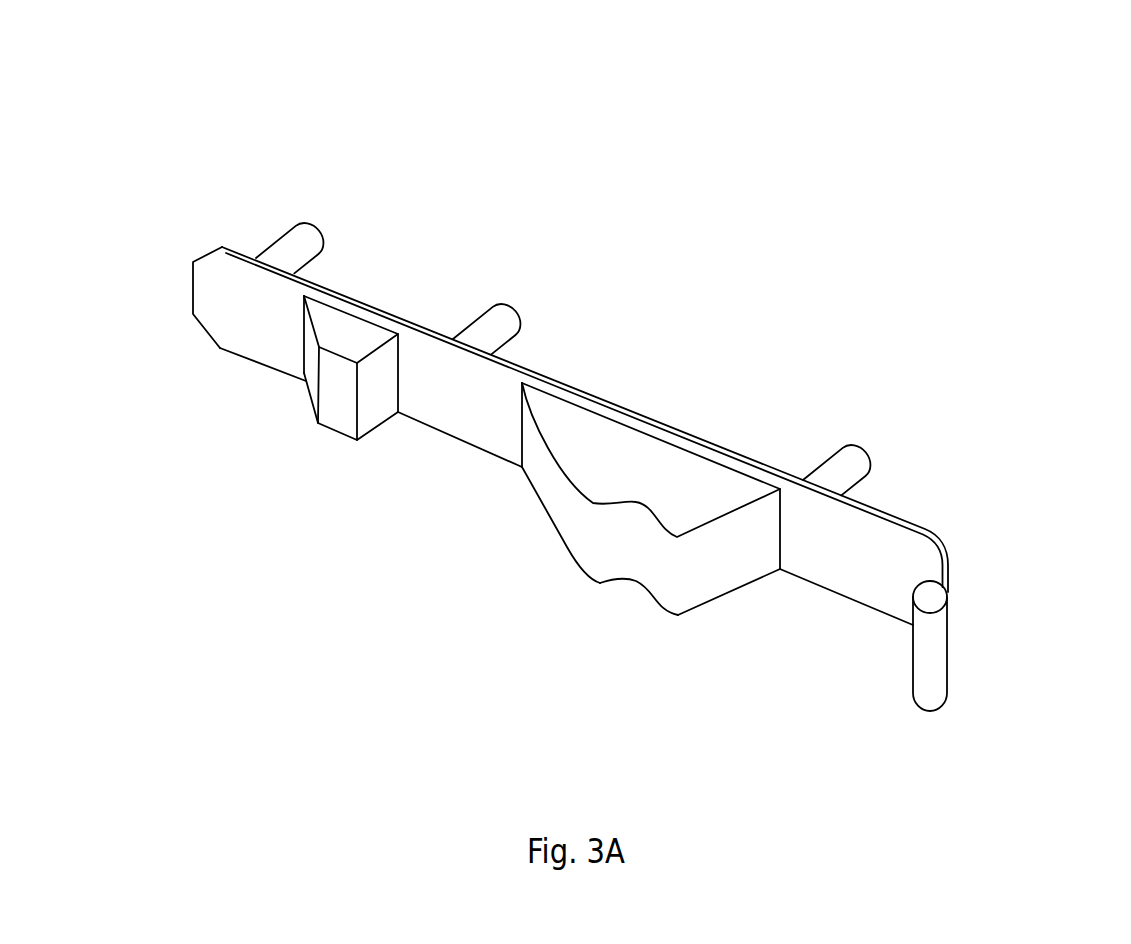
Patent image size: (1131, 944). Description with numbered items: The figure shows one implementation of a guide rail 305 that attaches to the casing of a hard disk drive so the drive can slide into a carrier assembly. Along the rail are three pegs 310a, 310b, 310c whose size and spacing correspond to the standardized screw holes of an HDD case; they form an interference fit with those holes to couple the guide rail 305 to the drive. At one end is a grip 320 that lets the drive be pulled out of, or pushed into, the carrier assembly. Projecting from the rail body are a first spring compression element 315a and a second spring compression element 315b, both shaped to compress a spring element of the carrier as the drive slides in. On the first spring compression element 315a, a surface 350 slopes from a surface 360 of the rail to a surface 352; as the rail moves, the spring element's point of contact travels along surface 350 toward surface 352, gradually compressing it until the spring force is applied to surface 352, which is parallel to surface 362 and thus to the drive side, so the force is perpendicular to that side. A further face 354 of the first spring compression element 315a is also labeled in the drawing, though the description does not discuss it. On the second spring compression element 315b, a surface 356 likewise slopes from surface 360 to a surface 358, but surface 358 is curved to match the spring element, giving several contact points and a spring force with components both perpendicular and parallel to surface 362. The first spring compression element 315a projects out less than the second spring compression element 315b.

The guide rail 305 is at (970, 138).
The peg 310a is at (308, 227).
The peg 310b is at (508, 307).
The peg 310c is at (857, 452).
The first spring compression element 315a is at (285, 533).
The second spring compression element 315b is at (572, 637).
The grip 320 is at (883, 727).
The surface 350 is at (307, 393).
The surface 352 is at (337, 422).
The pocket front wall 354 is at (372, 423).
The surface 356 is at (548, 512).
The surface 358 is at (637, 555).
The surface 360 is at (723, 583).
The surface 362 is at (473, 423).